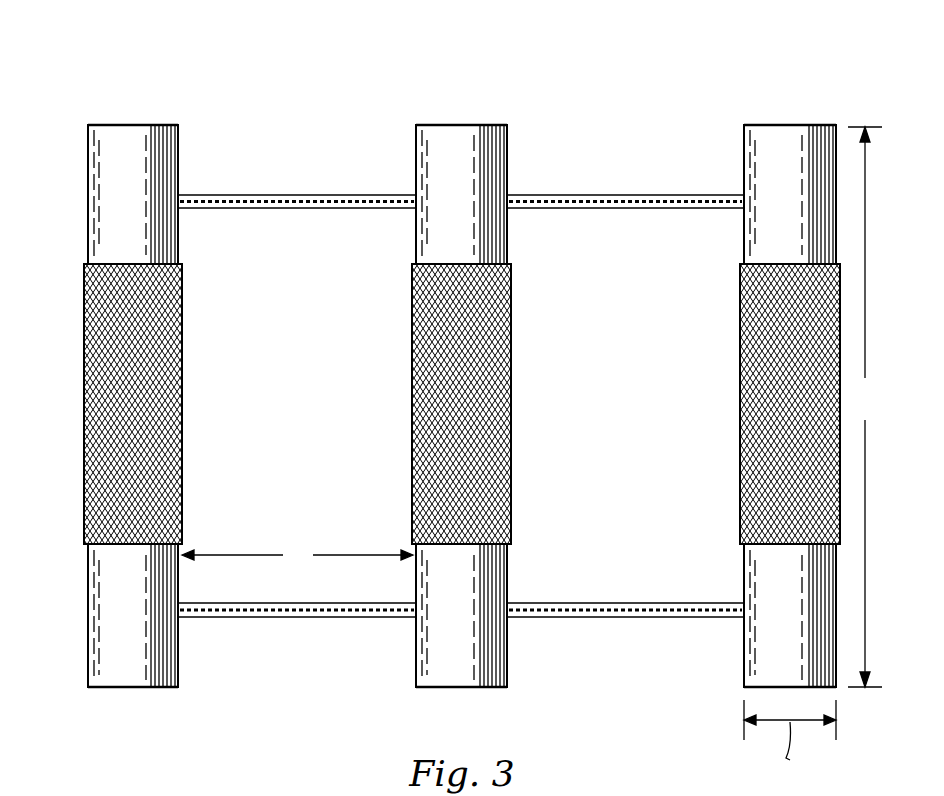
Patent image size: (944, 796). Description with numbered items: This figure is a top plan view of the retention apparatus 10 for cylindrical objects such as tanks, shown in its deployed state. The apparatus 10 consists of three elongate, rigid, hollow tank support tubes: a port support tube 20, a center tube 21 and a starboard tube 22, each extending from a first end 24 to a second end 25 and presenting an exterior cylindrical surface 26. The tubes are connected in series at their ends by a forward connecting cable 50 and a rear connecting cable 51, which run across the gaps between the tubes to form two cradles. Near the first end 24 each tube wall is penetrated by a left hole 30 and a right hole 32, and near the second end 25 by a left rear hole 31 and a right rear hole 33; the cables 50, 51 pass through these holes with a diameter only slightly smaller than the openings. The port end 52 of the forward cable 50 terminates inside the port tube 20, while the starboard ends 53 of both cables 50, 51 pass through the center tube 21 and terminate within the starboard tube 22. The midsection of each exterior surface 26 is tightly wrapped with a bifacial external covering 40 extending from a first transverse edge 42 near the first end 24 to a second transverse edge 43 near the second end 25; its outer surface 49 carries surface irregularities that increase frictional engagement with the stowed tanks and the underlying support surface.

The retention apparatus 10 is at (176, 84).
The port support tube 20 is at (80, 652).
The center tube 21 is at (406, 672).
The starboard tube 22 is at (733, 674).
The first end 24 is at (130, 125).
The second end 25 is at (129, 688).
The exterior cylindrical surface 26 is at (136, 209).
The left hole 30 is at (413, 210).
The left rear hole 31 is at (415, 618).
The right hole 32 is at (508, 209).
The right rear hole 33 is at (510, 603).
The bifacial external covering 40 is at (78, 433).
The first transverse edge 42 is at (130, 262).
The second transverse edge 43 is at (110, 545).
The outer surface 49 is at (84, 325).
The forward connecting cable 50 is at (350, 196).
The rear connecting cable 51 is at (270, 618).
The port end 52 is at (180, 195).
The starboard ends 53 is at (708, 196).